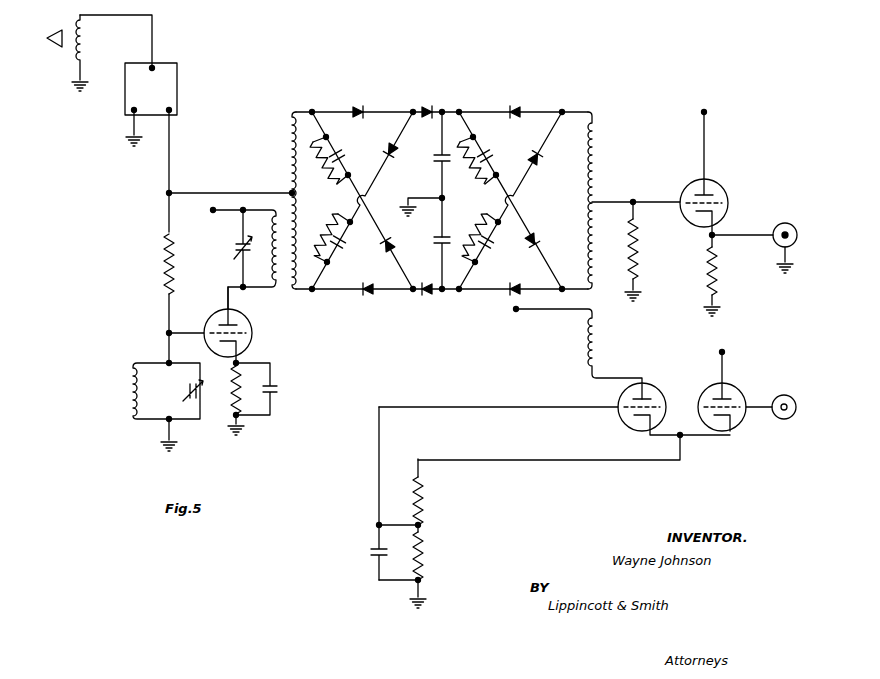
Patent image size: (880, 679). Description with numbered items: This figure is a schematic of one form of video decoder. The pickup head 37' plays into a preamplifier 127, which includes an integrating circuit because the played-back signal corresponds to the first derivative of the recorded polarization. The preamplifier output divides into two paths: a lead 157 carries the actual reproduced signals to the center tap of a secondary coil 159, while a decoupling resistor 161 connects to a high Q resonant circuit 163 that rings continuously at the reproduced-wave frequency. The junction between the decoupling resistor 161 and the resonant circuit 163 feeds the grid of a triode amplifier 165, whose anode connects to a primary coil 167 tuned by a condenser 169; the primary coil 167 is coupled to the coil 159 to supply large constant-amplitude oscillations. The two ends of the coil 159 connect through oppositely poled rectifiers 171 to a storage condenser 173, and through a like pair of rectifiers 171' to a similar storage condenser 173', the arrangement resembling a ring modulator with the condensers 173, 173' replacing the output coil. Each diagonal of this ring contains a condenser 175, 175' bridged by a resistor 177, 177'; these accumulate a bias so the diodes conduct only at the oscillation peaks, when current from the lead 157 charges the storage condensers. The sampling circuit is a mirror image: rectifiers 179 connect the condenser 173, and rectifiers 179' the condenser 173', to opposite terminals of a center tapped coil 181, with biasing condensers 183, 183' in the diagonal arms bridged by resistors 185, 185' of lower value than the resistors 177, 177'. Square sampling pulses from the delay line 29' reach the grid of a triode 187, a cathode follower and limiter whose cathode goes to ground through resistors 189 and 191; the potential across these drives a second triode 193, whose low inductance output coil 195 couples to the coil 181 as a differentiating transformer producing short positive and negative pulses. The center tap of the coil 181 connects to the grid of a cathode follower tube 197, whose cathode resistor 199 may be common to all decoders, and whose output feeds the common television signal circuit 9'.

The pickup head 37' is at (96, 49).
The preamplifier 127 is at (166, 63).
The lead 157 is at (228, 178).
The secondary coil 159 is at (288, 156).
The decoupling resistor 161 is at (162, 266).
The high Q resonant circuit 163 is at (172, 389).
The triode amplifier 165 is at (217, 314).
The primary coil 167 is at (266, 278).
The condenser 169 is at (233, 249).
The rectifiers 171 is at (387, 119).
The rectifiers 171' is at (388, 279).
The storage condenser 173 is at (424, 174).
The storage condenser 173' is at (425, 263).
The condenser 175 is at (345, 252).
The condenser 175' is at (348, 146).
The resistor 177 is at (331, 230).
The resistor 177' is at (327, 168).
The rectifiers 179 is at (534, 187).
The rectifiers 179' is at (551, 155).
The center tapped coil 181 is at (607, 135).
The biasing condenser 183 is at (496, 145).
The biasing condenser 183' is at (496, 252).
The resistor 185 is at (473, 166).
The resistor 185' is at (477, 230).
The triode 187 is at (729, 388).
The resistor 189 is at (421, 514).
The resistor 191 is at (423, 564).
The second triode 193 is at (645, 389).
The low inductance output coil 195 is at (604, 357).
The cathode follower tube 197 is at (714, 189).
The cathode resistor 199 is at (726, 286).
The delay line 29' is at (771, 395).
The common television signal circuit 9' is at (754, 237).